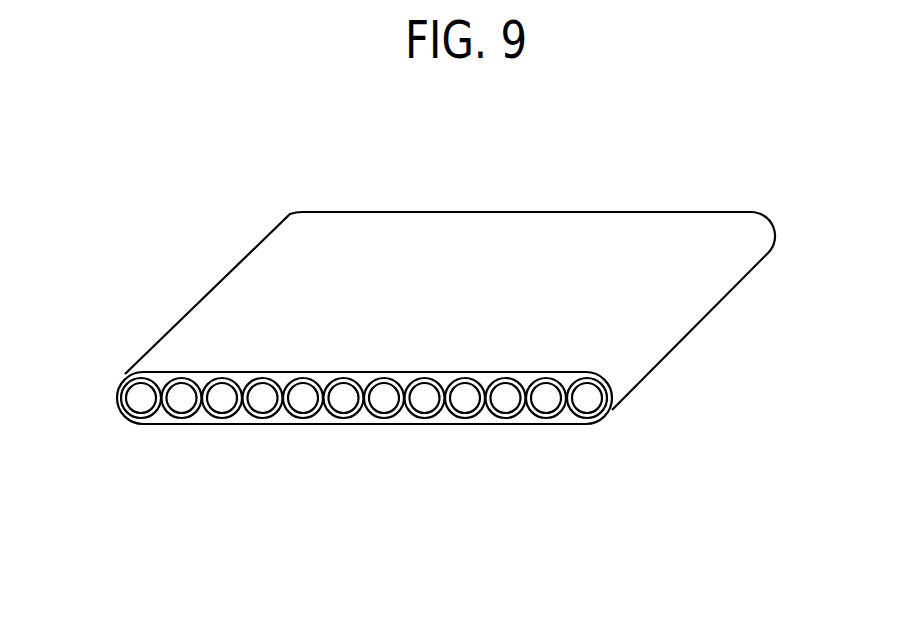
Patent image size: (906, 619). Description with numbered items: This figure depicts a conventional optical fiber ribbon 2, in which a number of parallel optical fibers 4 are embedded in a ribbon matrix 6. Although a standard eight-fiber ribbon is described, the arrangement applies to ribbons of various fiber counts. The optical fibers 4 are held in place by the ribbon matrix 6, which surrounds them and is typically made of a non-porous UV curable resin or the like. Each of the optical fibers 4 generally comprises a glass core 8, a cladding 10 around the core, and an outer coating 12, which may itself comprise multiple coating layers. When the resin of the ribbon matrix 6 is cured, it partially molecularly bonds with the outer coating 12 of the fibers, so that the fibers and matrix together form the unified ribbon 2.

The optical fiber ribbon 2 is at (170, 265).
The optical fibers 4 is at (116, 403).
The ribbon matrix 6 is at (192, 350).
The glass core 8 is at (142, 398).
The cladding 10 is at (159, 412).
The outer coating 12 is at (138, 424).